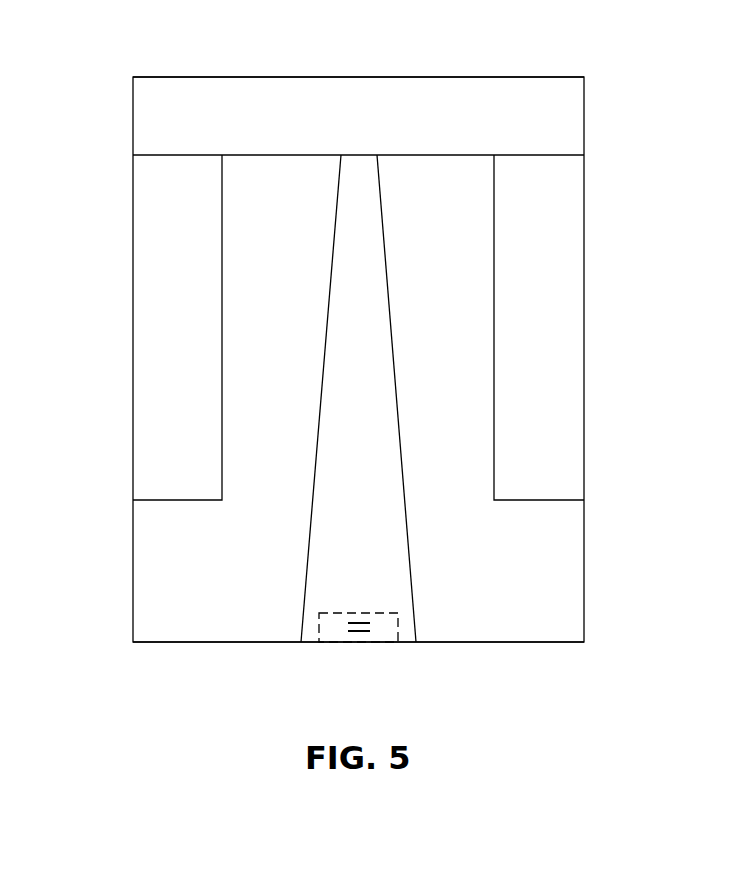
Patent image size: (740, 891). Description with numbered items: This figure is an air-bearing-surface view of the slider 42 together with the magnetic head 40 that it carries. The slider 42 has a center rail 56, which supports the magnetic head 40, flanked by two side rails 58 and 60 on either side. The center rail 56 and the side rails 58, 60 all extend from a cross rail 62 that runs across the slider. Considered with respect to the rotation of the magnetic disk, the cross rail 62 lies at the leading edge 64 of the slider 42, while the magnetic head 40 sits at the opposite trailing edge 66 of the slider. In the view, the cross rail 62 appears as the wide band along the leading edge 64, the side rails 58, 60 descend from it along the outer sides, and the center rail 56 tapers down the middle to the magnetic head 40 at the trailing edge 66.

The magnetic head 40 is at (337, 633).
The slider 42 is at (131, 590).
The center rail 56 is at (343, 272).
The side rail 58 is at (148, 238).
The side rail 60 is at (567, 240).
The cross rail 62 is at (277, 88).
The leading edge 64 is at (461, 77).
The trailing edge 66 is at (481, 642).